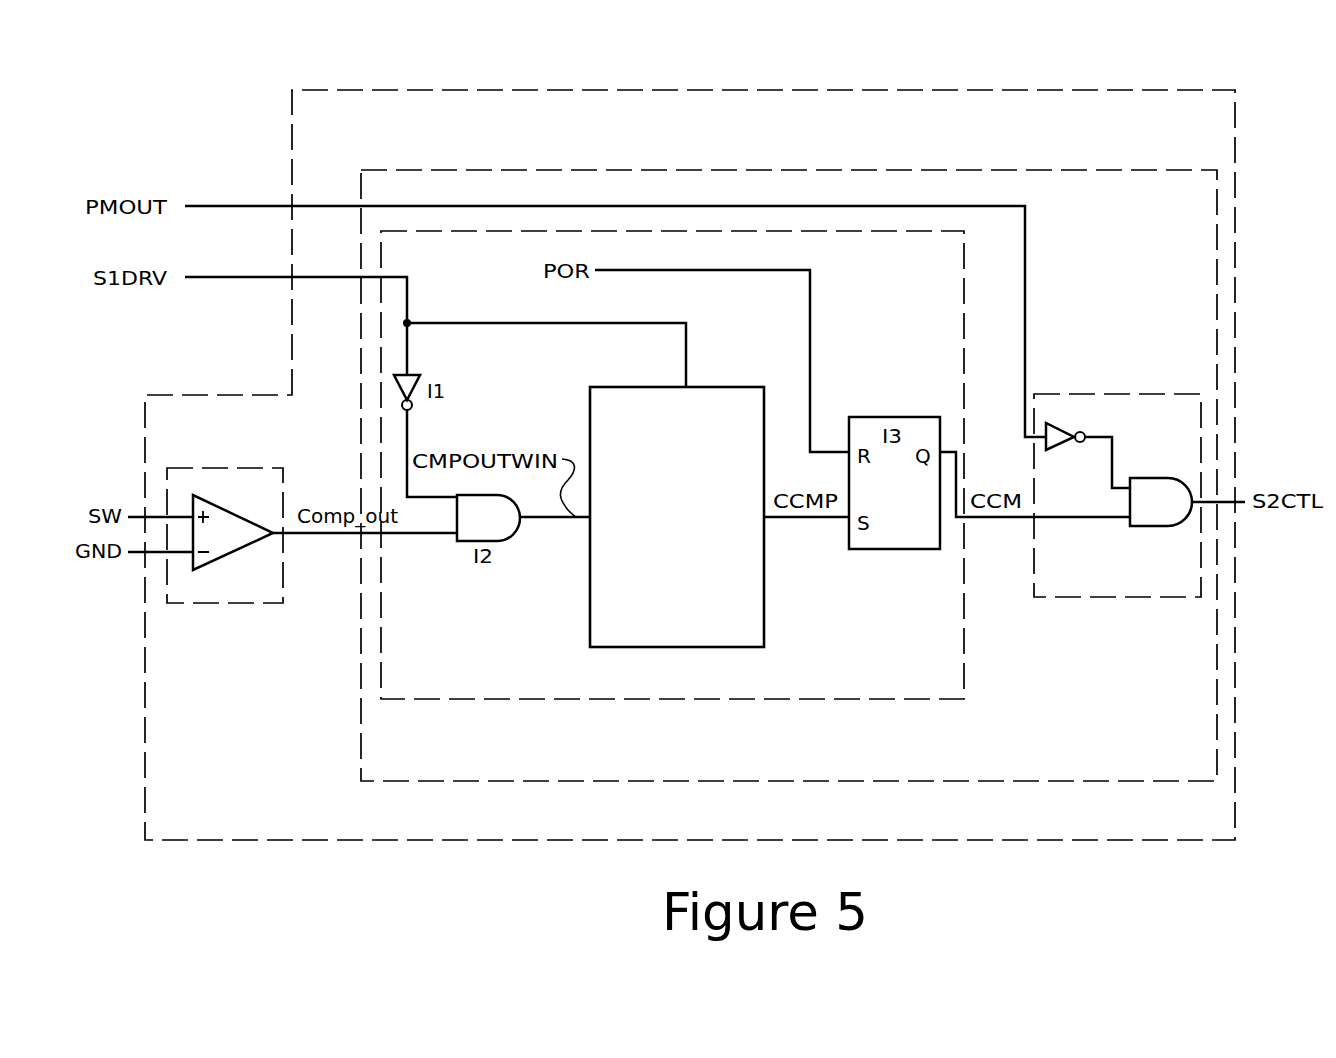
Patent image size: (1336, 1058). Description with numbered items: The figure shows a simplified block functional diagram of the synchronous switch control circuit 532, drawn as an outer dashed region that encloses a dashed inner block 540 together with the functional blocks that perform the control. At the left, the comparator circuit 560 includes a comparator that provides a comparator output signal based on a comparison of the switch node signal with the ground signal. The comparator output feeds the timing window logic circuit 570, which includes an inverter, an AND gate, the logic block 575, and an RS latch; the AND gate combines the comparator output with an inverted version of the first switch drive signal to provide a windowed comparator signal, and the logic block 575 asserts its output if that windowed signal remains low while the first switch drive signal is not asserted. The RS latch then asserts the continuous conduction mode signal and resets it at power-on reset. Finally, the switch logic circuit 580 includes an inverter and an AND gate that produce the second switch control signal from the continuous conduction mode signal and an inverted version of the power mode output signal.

The synchronous switch control circuit 532 is at (1042, 126).
The logic block 540 is at (1165, 214).
The comparator circuit 560 is at (254, 592).
The timing window logic circuit 570 is at (587, 689).
The logic block 575 is at (695, 632).
The switch logic circuit 580 is at (1133, 584).